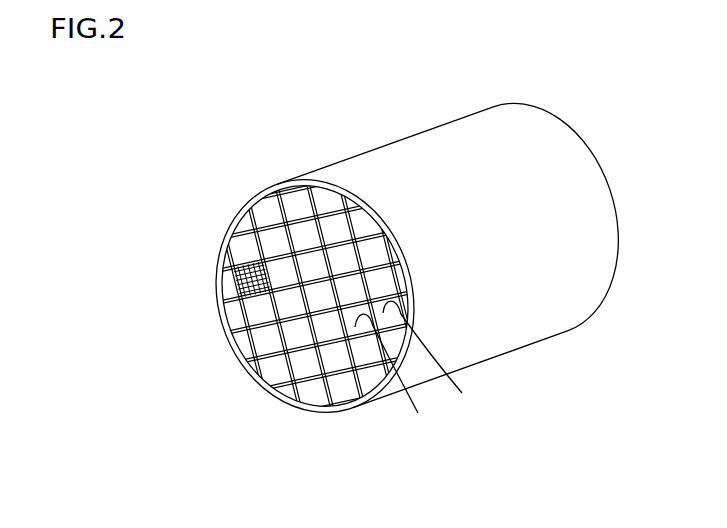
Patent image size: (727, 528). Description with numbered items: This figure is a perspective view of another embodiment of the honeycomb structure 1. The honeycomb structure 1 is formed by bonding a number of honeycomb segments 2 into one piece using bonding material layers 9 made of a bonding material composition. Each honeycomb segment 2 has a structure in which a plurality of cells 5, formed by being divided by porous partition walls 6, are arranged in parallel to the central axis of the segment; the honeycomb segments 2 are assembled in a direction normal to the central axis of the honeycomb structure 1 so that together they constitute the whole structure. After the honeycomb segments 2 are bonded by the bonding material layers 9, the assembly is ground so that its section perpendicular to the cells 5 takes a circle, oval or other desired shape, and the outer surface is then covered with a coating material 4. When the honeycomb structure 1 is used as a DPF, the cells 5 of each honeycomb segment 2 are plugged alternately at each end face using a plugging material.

The honeycomb structure 1 is at (384, 130).
The honeycomb segment 2 is at (320, 276).
The coating material 4 is at (218, 290).
The cell 5 is at (236, 232).
The partition wall 6 is at (238, 231).
The bonding material layer 9 is at (418, 367).